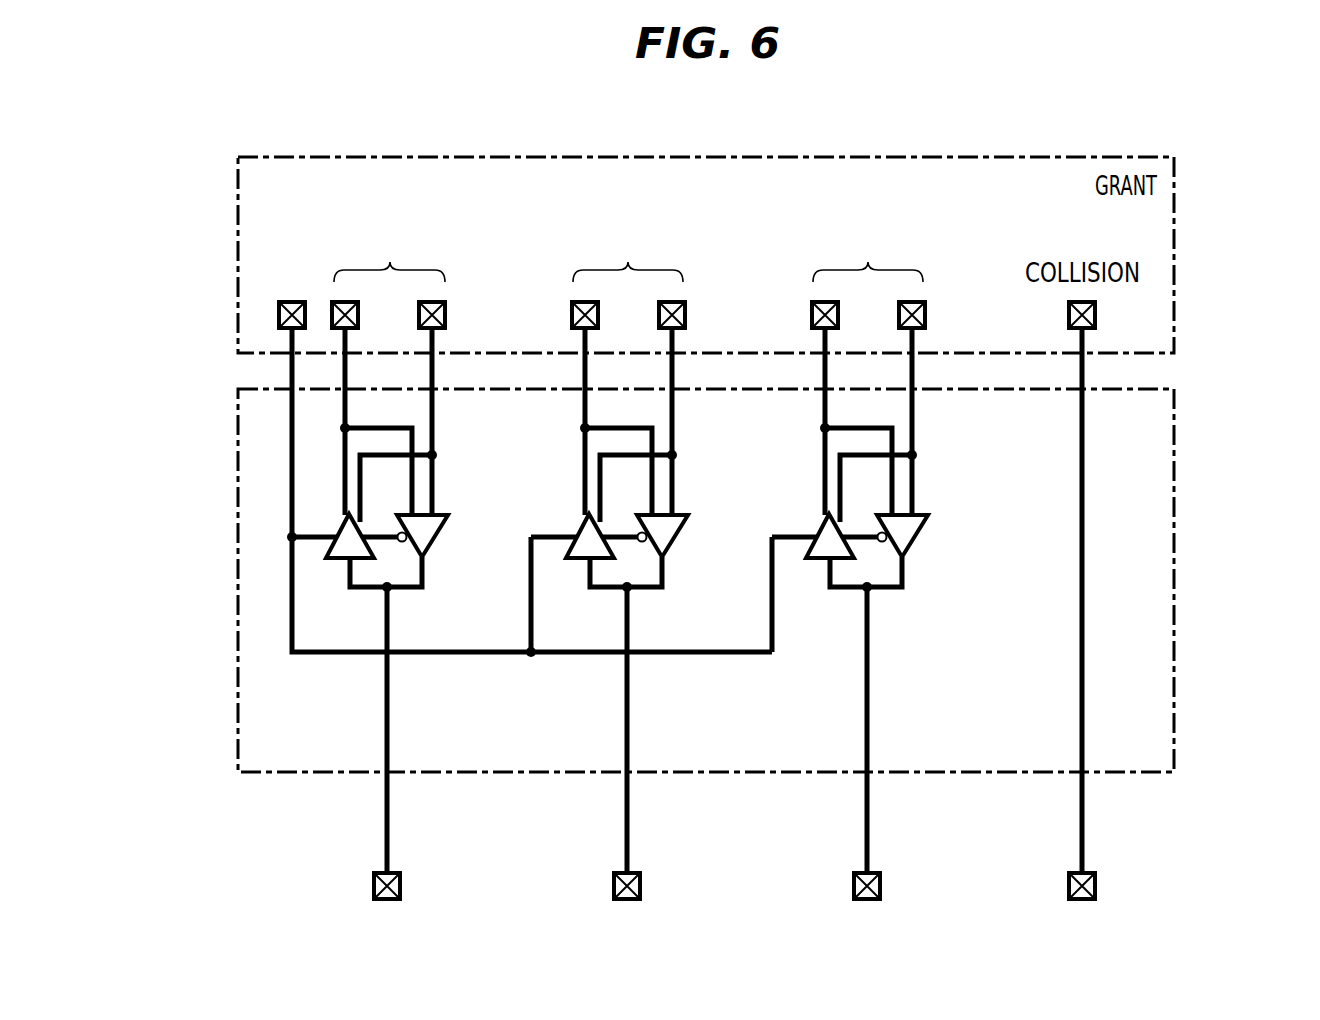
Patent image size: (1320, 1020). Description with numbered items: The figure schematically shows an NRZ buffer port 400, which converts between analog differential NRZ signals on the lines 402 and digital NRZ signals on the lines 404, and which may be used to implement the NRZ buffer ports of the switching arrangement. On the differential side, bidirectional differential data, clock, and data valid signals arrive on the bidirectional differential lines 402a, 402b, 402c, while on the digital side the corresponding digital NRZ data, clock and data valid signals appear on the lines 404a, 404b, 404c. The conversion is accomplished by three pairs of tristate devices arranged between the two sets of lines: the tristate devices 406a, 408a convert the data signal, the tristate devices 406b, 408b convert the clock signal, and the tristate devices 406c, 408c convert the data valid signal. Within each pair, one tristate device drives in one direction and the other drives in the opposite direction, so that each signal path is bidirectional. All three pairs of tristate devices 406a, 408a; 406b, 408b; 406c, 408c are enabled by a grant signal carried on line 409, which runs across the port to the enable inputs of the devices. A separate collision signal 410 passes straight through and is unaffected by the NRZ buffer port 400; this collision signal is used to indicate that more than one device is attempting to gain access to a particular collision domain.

The NRZ buffer port 400 is at (1174, 481).
The lines 402 is at (1174, 233).
The bidirectional differential line 402a is at (362, 262).
The bidirectional differential line 402b is at (628, 259).
The bidirectional differential line 402c is at (868, 247).
The lines 404 is at (1232, 802).
The line 404a is at (372, 886).
The line 404b is at (612, 886).
The line 404c is at (853, 886).
The tristate device 406a is at (445, 540).
The tristate device 406b is at (685, 540).
The tristate device 406c is at (925, 540).
The tristate device 408a is at (342, 560).
The tristate device 408b is at (582, 560).
The tristate device 408c is at (822, 560).
The line 409 is at (292, 502).
The collision signal 410 is at (1084, 630).